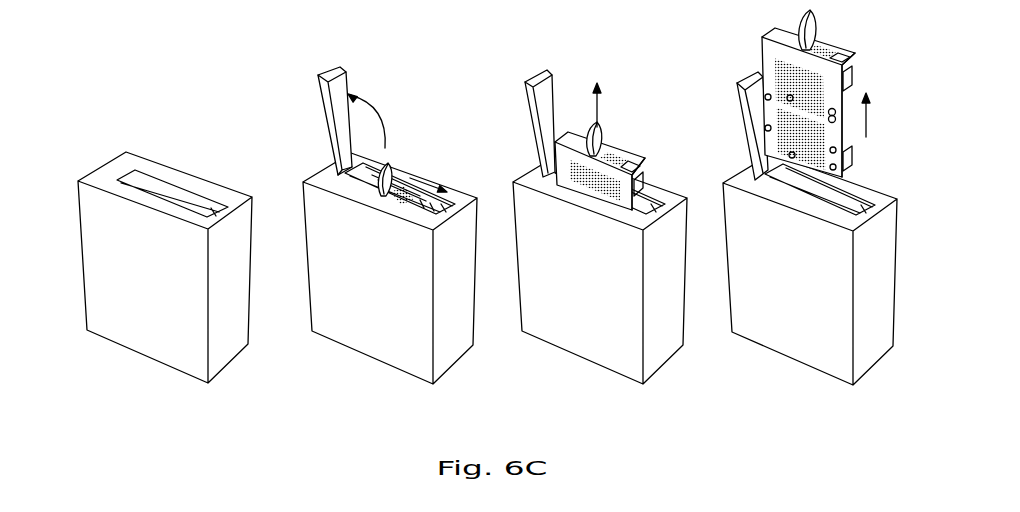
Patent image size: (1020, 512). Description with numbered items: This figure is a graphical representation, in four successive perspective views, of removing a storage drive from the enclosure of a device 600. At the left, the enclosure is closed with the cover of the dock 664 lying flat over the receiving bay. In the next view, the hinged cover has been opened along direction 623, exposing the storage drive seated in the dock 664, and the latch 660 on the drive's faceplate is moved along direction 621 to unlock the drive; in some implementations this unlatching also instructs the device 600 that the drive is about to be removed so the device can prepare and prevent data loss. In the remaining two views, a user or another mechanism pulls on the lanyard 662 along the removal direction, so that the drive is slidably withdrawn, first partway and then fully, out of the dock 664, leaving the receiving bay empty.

The device 600 is at (134, 250).
The latch 660 is at (412, 203).
The lanyard 662 is at (596, 138).
The dock 664 is at (853, 203).
The direction 621 is at (424, 175).
The direction 623 is at (380, 122).